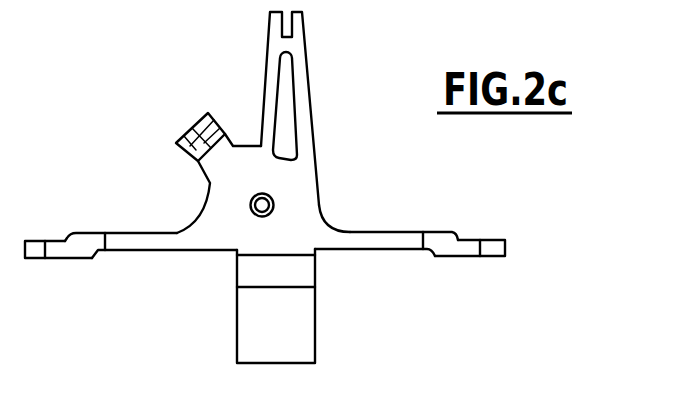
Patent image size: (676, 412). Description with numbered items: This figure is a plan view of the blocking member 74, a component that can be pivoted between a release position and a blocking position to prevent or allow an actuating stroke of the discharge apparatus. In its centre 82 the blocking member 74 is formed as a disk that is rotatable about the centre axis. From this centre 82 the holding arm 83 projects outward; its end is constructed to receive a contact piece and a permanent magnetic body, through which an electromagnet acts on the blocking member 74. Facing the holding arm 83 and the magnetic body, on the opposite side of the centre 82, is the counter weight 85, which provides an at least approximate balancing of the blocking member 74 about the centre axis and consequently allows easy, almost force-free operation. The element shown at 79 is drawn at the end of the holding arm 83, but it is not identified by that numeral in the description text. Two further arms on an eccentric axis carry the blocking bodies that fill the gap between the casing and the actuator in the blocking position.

The blocking member 74 is at (208, 275).
The stud 79 is at (190, 132).
The centre 82 is at (300, 182).
The holding arm 83 is at (305, 98).
The counter weight 85 is at (303, 323).